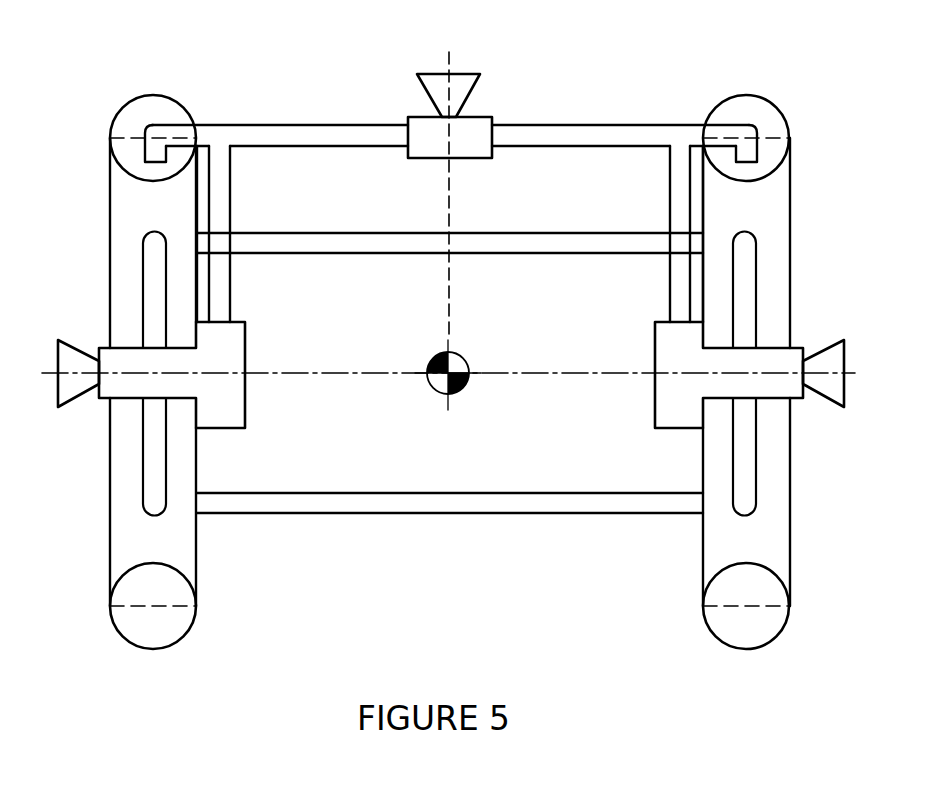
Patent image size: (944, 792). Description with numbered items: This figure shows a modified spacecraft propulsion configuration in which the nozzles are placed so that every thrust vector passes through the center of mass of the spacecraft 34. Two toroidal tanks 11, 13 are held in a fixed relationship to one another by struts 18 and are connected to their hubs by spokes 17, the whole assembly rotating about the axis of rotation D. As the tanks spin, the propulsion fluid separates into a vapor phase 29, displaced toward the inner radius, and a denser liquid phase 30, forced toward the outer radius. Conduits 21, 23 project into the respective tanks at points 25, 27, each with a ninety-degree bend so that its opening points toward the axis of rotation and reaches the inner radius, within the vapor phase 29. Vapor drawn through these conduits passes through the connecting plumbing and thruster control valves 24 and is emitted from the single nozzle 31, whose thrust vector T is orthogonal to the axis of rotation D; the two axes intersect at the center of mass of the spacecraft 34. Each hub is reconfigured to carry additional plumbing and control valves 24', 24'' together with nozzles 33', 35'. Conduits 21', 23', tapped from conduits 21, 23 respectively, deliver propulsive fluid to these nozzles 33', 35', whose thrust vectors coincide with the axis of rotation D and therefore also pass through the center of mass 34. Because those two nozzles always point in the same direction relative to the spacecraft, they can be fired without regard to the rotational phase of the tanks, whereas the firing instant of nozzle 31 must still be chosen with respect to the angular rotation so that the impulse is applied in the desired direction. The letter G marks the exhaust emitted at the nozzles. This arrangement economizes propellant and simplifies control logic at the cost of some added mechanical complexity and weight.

The toroidal tank 11 is at (196, 606).
The toroidal tank 13 is at (790, 622).
The spokes 17 is at (145, 303).
The struts 18 is at (566, 236).
The conduit 21 is at (280, 115).
The conduit 23 is at (620, 115).
The conduit 21' is at (239, 234).
The conduit 23' is at (664, 234).
The thruster control valves 24 is at (491, 125).
The control valves 24' is at (201, 375).
The control valves 24'' is at (705, 375).
The point 25 is at (197, 125).
The point 27 is at (703, 127).
The vapor phase 29 is at (130, 152).
The liquid phase 30 is at (135, 120).
The nozzle 31 is at (480, 76).
The nozzle 33' is at (61, 366).
The nozzle 35' is at (843, 374).
The center of mass of the spacecraft 34 is at (462, 392).
The thrust vector T is at (452, 58).
The axis of rotation D is at (588, 372).
The gas jet G is at (100, 402).